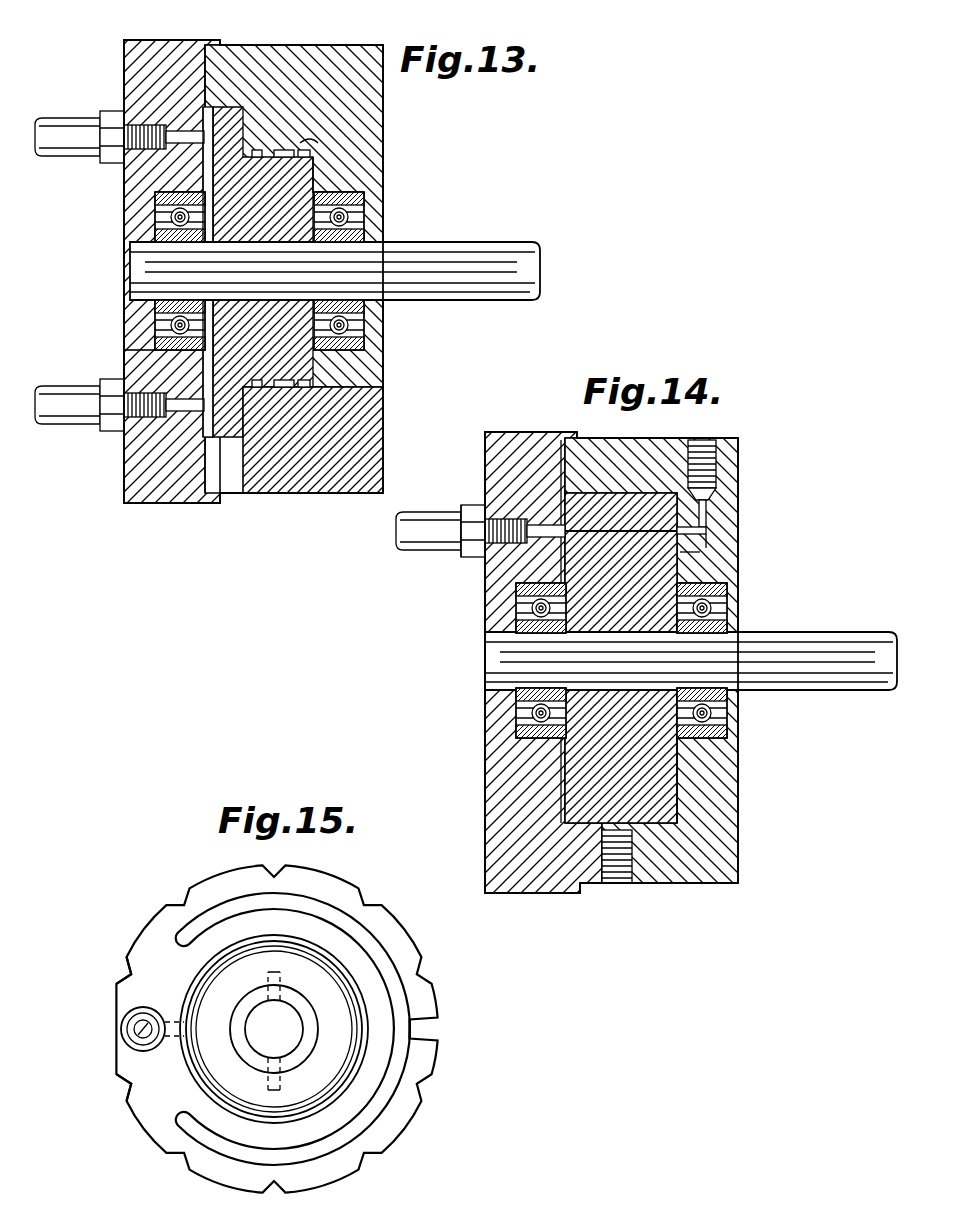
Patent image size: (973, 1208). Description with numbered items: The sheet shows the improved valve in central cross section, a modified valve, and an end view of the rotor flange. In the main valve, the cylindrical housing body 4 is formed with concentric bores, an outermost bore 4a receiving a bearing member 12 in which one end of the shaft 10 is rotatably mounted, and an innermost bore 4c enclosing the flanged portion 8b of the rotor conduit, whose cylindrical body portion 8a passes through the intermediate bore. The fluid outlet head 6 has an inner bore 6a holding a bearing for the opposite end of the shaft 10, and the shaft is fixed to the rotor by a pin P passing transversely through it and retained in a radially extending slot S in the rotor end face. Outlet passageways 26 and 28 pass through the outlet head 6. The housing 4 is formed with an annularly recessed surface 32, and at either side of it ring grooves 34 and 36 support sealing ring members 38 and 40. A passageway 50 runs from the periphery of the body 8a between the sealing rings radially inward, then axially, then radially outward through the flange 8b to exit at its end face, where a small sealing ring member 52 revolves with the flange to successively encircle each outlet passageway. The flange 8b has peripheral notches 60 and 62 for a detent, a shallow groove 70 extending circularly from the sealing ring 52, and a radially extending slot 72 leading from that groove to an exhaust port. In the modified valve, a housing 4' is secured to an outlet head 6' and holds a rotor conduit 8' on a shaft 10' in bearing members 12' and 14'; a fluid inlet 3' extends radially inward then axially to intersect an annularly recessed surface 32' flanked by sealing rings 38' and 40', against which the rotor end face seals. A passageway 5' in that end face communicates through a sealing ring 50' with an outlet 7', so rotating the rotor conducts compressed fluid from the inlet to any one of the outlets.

In FIG. 13, the fluid outlet head 6 is at (172, 253).
In FIG. 13, the outlet passageway 26 is at (180, 130).
In FIG. 13, the innermost bore 4c is at (257, 148).
In FIG. 13, the ring groove 34 is at (277, 150).
In FIG. 13, the sealing ring member 38 is at (301, 91).
In FIG. 13, the annularly recessed surface 32 is at (330, 112).
In FIG. 13, the ring groove 36 is at (358, 90).
In FIG. 13, the sealing ring member 40 is at (356, 112).
In FIG. 13, the radially extending slot S is at (313, 187).
In FIG. 13, the outermost bore 4a is at (320, 196).
In FIG. 13, the housing body 4 is at (314, 216).
In FIG. 13, the bearing member 12 is at (365, 325).
In FIG. 13, the shaft 10 is at (335, 291).
In FIG. 15, the shaft 10 is at (260, 1031).
In FIG. 13, the pin P is at (302, 349).
In FIG. 15, the pin P is at (292, 964).
In FIG. 13, the cylindrical body portion 8a is at (333, 381).
In FIG. 13, the inner bore 6a is at (148, 362).
In FIG. 13, the outlet passageway 28 is at (183, 412).
In FIG. 13, the flanged portion 8b is at (250, 432).
In FIG. 15, the flanged portion 8b is at (413, 943).
In FIG. 14, the outlet head 6' is at (543, 643).
In FIG. 14, the sealing ring 50' is at (536, 514).
In FIG. 14, the outlet 7' is at (464, 556).
In FIG. 14, the passageway 5' is at (621, 617).
In FIG. 14, the fluid inlet 3' is at (715, 455).
In FIG. 14, the housing 4' is at (672, 660).
In FIG. 14, the sealing ring 38' is at (737, 513).
In FIG. 14, the annularly recessed surface 32' is at (752, 540).
In FIG. 14, the sealing ring 40' is at (741, 566).
In FIG. 14, the shaft 10' is at (691, 644).
In FIG. 14, the bearing member 12' is at (732, 713).
In FIG. 14, the rotor conduit 8' is at (723, 780).
In FIG. 14, the bearing member 14' is at (502, 750).
In FIG. 15, the notch 60 is at (118, 983).
In FIG. 15, the sealing ring member 52 is at (128, 1028).
In FIG. 15, the passageway 50 is at (106, 1063).
In FIG. 15, the notch 62 is at (129, 1080).
In FIG. 15, the radially extending slot 72 is at (425, 1026).
In FIG. 15, the shallow groove 70 is at (380, 1100).